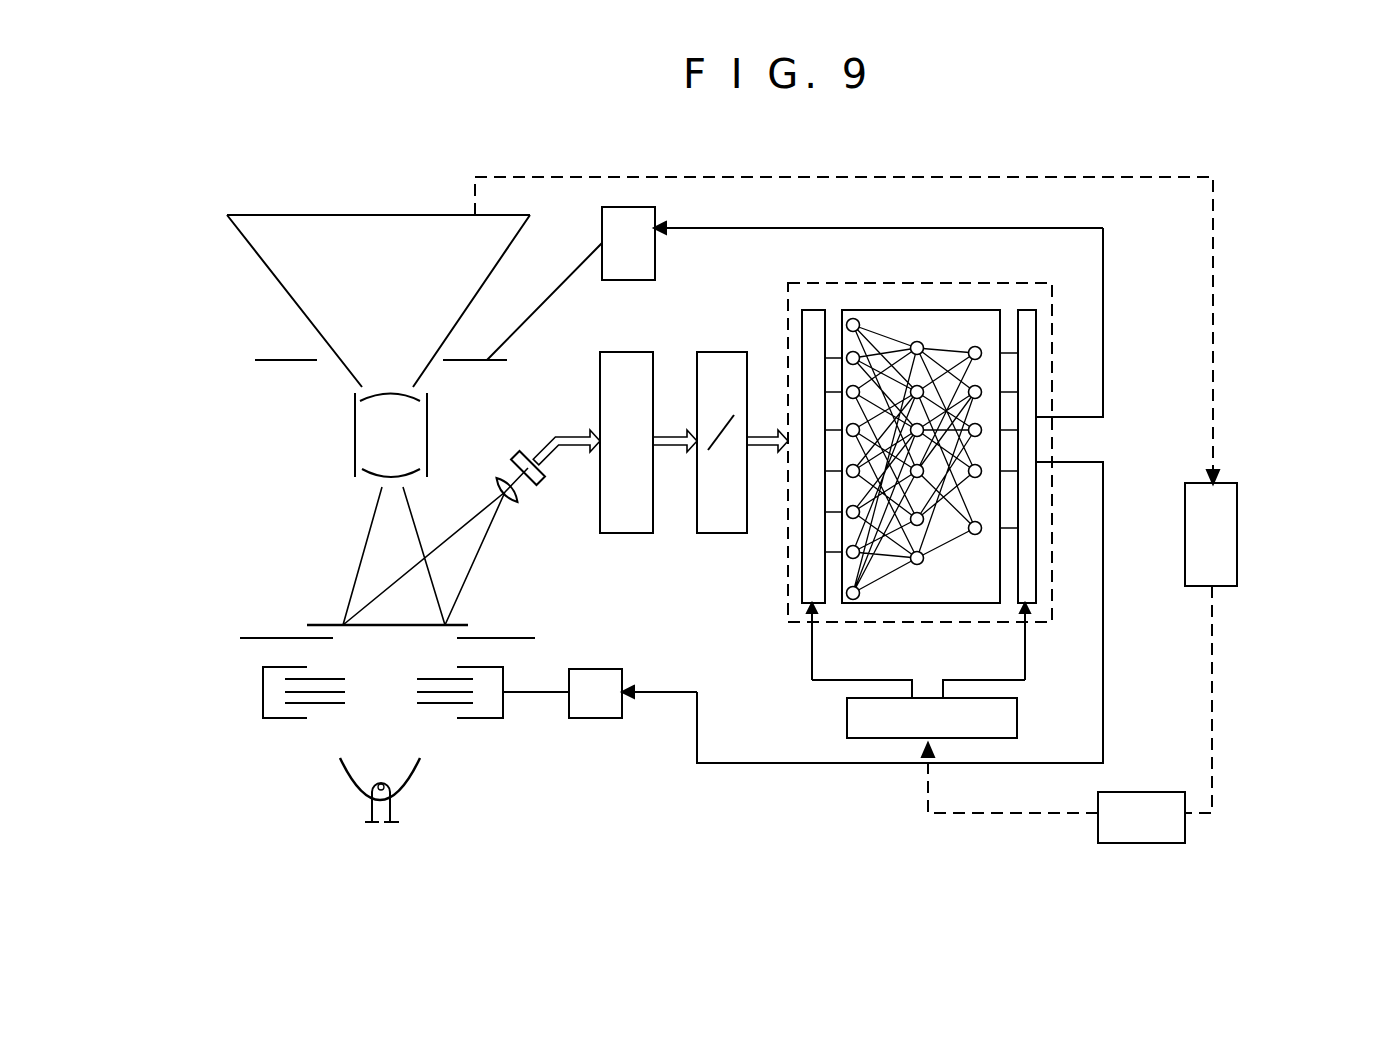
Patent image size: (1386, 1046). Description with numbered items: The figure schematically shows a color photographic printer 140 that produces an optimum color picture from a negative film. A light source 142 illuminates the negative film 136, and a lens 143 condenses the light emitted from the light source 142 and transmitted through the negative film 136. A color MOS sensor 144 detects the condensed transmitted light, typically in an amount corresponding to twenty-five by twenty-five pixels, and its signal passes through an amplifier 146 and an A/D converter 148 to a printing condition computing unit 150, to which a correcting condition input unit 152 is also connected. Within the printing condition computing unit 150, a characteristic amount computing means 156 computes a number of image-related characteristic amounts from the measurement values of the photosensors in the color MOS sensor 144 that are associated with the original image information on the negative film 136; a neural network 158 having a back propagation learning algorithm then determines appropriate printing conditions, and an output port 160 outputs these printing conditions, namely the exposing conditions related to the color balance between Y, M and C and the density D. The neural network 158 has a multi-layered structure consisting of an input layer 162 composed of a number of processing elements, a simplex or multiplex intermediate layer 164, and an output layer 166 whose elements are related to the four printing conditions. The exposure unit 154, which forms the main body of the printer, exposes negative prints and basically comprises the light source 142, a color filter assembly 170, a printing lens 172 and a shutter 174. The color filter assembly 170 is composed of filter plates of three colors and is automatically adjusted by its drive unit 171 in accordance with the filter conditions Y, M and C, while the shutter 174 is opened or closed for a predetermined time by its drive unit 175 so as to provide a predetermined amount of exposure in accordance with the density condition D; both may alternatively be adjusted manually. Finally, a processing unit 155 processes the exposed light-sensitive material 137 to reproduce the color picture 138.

The negative film 136 is at (325, 624).
The light-sensitive material 137 is at (400, 215).
The color picture 138 is at (1140, 843).
The color photographic printer 140 is at (967, 168).
The light source 142 is at (403, 797).
The lens 143 is at (507, 507).
The color MOS sensor 144 is at (540, 482).
The amplifier 146 is at (625, 533).
The A/D converter 148 is at (718, 533).
The printing condition computing unit 150 is at (848, 627).
The correcting condition input unit 152 is at (888, 728).
The exposure unit 154 is at (222, 352).
The processing unit 155 is at (1237, 530).
The characteristic amount computing means 156 is at (800, 597).
The neural network 158 is at (963, 605).
The output port 160 is at (1028, 342).
The input layer 162 is at (856, 310).
The intermediate layer 164 is at (921, 334).
The output layer 166 is at (980, 337).
The color filter assembly 170 is at (263, 690).
The drive unit 171 is at (587, 718).
The printing lens 172 is at (355, 440).
The shutter 174 is at (474, 362).
The drive unit 175 is at (628, 207).